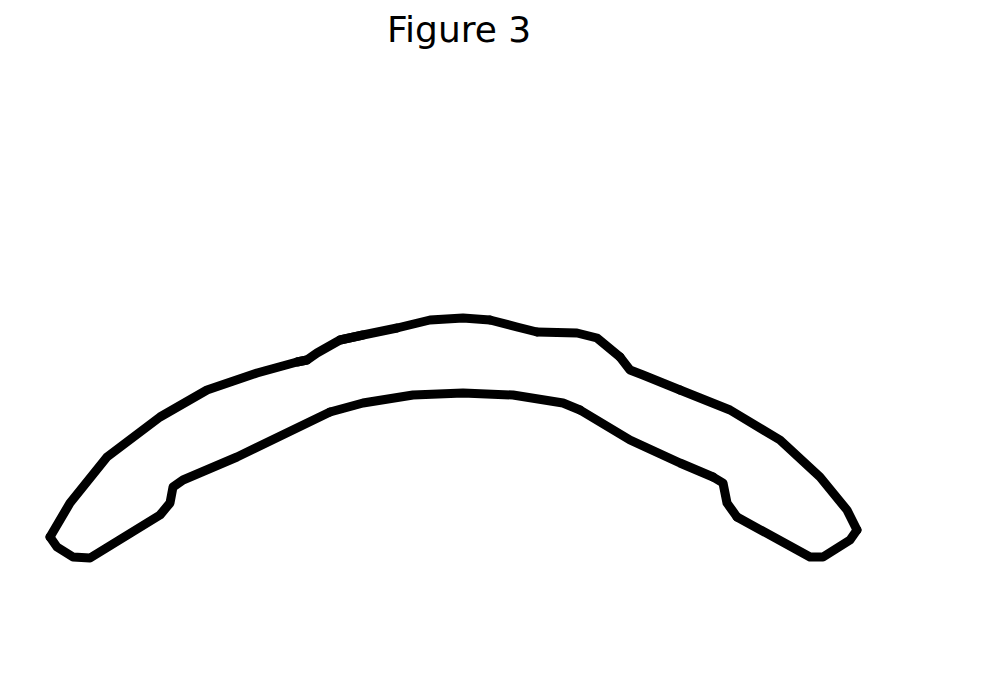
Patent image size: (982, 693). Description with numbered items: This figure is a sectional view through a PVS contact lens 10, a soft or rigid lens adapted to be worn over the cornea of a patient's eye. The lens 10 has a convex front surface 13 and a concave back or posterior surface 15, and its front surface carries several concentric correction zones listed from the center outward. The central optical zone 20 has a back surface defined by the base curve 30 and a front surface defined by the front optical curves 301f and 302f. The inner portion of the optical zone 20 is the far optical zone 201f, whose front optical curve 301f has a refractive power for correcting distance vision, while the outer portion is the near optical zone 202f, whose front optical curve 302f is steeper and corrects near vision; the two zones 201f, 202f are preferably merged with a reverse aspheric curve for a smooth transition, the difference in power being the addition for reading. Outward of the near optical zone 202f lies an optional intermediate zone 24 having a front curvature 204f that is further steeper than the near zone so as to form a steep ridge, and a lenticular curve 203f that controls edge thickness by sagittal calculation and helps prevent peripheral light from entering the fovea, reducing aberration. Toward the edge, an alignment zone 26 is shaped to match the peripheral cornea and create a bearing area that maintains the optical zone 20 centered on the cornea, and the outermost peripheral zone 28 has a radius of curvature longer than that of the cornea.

The PVS contact lens 10 is at (453, 419).
The convex front surface 13 is at (160, 415).
The back or posterior surface 15 is at (233, 463).
The optical zone 20 is at (523, 364).
The intermediate zone 24 is at (653, 418).
The alignment zone 26 is at (750, 492).
The peripheral zone 28 is at (797, 518).
The base curve 30 is at (468, 410).
The far optical zone 201f is at (493, 350).
The near optical zone 202f is at (358, 353).
The lenticular curve 203f is at (730, 407).
The front curvature of intermediate zone 204f is at (647, 370).
The front optical curve of far optical zone 301f is at (443, 318).
The front optical curve of near optical zone 302f is at (333, 338).